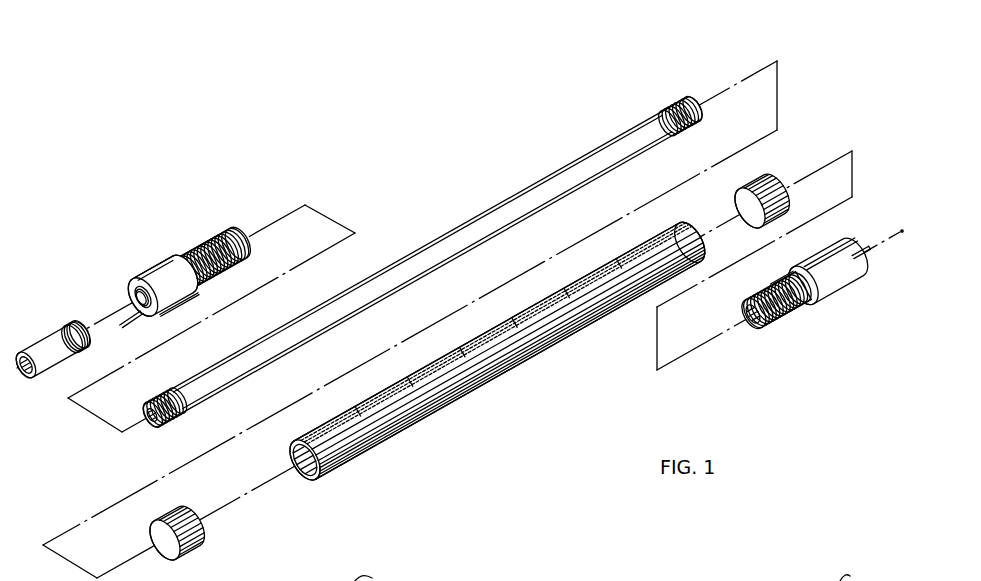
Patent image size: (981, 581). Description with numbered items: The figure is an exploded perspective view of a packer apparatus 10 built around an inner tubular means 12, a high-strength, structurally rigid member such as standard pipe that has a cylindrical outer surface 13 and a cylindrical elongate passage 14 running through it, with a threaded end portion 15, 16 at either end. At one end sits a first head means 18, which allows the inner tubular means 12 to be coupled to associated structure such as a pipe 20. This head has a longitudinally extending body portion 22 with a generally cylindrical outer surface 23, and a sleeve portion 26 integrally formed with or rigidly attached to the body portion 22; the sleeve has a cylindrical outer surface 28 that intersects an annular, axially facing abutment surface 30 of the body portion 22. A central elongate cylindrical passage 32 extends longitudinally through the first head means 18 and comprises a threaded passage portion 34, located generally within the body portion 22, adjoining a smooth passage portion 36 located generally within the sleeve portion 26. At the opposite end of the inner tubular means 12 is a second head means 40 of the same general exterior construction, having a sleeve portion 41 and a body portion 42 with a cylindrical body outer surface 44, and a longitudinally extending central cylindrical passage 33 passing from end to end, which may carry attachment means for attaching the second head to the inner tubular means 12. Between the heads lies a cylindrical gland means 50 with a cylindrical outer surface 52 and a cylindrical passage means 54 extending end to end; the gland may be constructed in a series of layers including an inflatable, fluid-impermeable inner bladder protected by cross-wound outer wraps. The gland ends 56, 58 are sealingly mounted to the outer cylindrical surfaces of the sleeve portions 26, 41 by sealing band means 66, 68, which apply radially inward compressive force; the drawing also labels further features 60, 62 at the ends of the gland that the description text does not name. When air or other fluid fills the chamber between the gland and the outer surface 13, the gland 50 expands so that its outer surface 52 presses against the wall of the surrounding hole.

The electrical connector assembly 10 is at (221, 128).
The inner tubular means 12 is at (420, 231).
The cylindrical outer surface 13 is at (329, 310).
The cylindrical elongate passage 14 is at (141, 419).
The threaded end portion 15 is at (170, 427).
The threaded end portion 16 is at (680, 100).
The first head means 18 is at (175, 216).
The pipe 20 is at (35, 333).
The body portion 22 is at (143, 265).
The cylindrical outer surface 23 is at (167, 258).
The sleeve portion 26 is at (189, 247).
The cylindrical outer surface 28 is at (218, 236).
The annular axially facing abutment surface 30 is at (196, 296).
The central elongate cylindrical passage 32 is at (135, 317).
The central cylindrical passage 33 is at (738, 314).
The threaded passage portion 34 is at (132, 298).
The smooth passage portion 36 is at (745, 325).
The second head means 40 is at (871, 308).
The sleeve portion 41 is at (712, 289).
The body portion 42 is at (843, 292).
The cylindrical body outer surface 44 is at (822, 294).
The cylindrical gland means 50 is at (491, 396).
The cylindrical outer surface 52 is at (415, 423).
The cylindrical passage means 54 is at (298, 470).
The gland end 56 is at (323, 477).
The gland end 58 is at (662, 237).
The open end 60 is at (293, 450).
The far end 62 is at (694, 228).
The sealing band means 66 is at (185, 556).
The sealing band means 68 is at (755, 175).